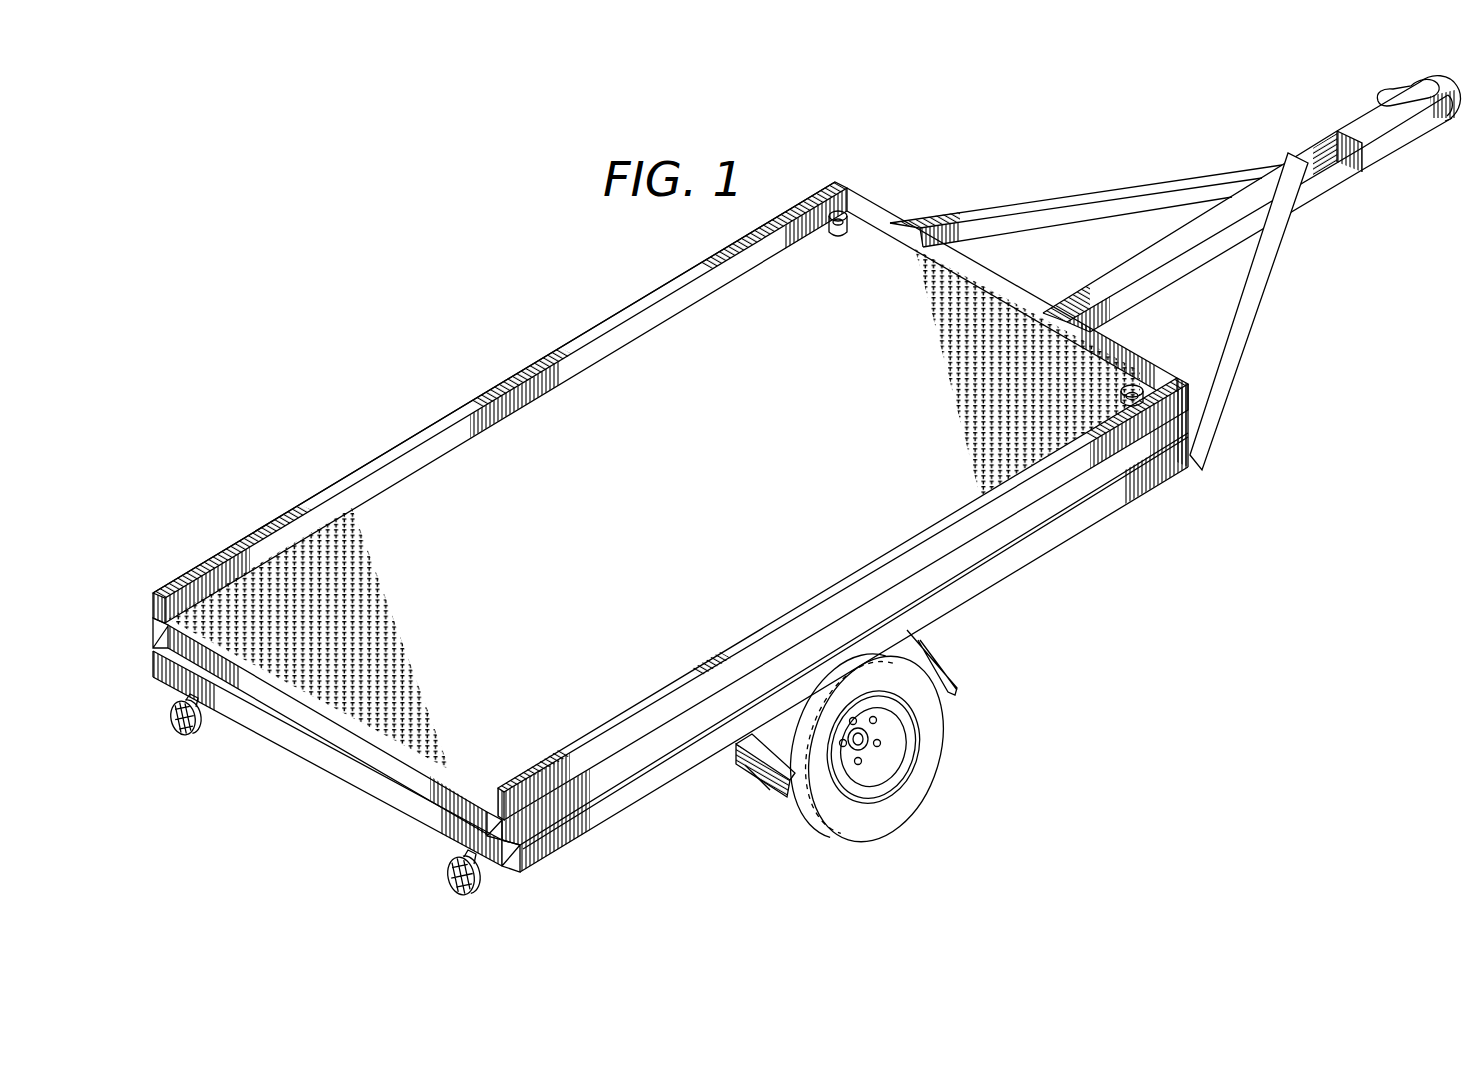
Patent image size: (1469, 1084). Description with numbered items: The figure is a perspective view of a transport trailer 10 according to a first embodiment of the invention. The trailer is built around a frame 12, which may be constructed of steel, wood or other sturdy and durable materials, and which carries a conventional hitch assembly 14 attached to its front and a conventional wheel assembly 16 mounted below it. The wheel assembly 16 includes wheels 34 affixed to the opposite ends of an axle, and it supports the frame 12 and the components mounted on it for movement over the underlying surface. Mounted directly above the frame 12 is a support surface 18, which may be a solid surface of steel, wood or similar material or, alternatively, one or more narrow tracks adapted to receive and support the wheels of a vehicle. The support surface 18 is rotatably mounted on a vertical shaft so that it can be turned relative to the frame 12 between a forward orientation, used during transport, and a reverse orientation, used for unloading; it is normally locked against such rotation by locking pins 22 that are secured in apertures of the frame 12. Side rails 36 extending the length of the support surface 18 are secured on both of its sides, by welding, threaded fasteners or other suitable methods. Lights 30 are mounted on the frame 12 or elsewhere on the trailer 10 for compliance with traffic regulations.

The transport trailer 10 is at (498, 270).
The frame 12 is at (1005, 566).
The hitch assembly 14 is at (1335, 178).
The wheel assembly 16 is at (722, 774).
The support surface 18 is at (671, 534).
The locking pins 22 is at (836, 240).
The lights 30 is at (172, 722).
The wheels 34 is at (848, 830).
The side rails 36 is at (1045, 487).